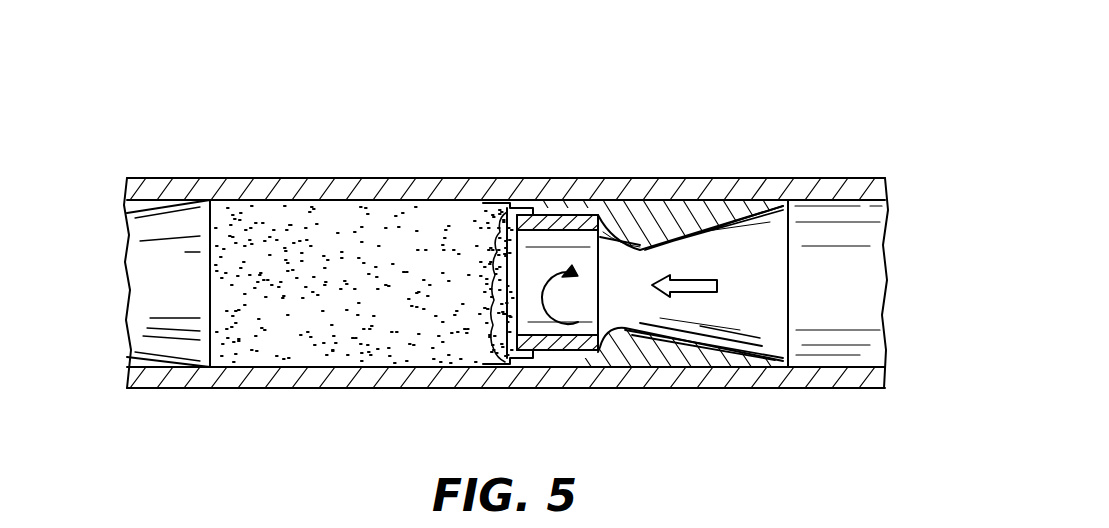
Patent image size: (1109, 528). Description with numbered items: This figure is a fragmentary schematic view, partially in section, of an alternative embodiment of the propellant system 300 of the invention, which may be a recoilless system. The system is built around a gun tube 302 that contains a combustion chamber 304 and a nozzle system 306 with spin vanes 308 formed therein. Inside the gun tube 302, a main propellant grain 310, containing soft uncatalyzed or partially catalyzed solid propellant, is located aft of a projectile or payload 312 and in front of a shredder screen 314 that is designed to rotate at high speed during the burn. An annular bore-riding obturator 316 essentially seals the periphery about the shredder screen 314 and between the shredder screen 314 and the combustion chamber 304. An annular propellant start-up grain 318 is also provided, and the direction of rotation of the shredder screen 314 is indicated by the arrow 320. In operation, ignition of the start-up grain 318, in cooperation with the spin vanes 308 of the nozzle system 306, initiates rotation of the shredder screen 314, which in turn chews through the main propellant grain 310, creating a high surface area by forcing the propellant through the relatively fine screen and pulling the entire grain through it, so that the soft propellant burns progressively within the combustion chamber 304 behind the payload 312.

The propellant system 300 is at (686, 92).
The gun tube 302 is at (378, 186).
The combustion chamber 304 is at (568, 257).
The nozzle system 306 is at (703, 235).
The spin vanes 308 is at (748, 348).
The main propellant grain 310 is at (293, 215).
The projectile or payload 312 is at (173, 222).
The shredder screen 314 is at (492, 277).
The annular bore-riding obturator 316 is at (520, 218).
The annular propellant start-up grain 318 is at (600, 238).
The arrow indicating shredder rotation 320 is at (555, 318).